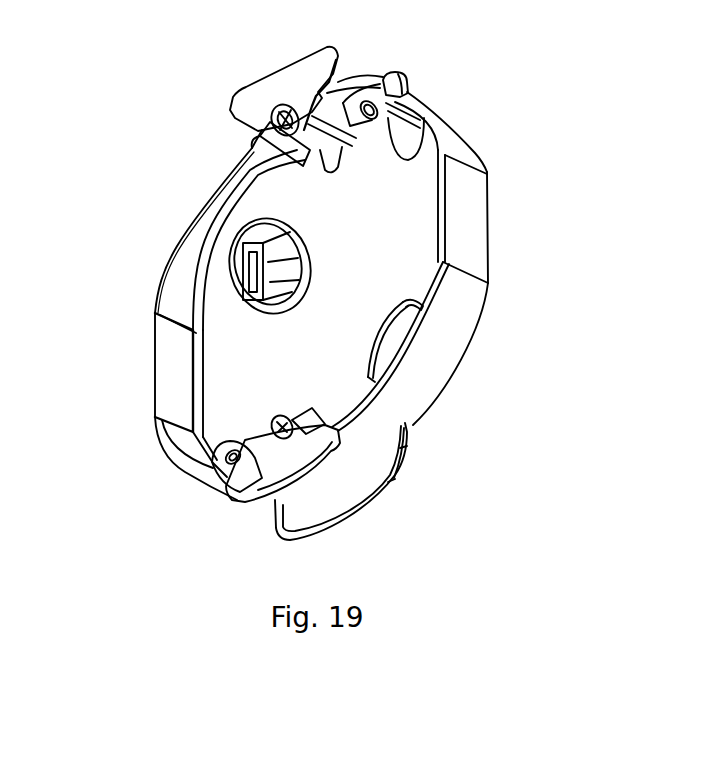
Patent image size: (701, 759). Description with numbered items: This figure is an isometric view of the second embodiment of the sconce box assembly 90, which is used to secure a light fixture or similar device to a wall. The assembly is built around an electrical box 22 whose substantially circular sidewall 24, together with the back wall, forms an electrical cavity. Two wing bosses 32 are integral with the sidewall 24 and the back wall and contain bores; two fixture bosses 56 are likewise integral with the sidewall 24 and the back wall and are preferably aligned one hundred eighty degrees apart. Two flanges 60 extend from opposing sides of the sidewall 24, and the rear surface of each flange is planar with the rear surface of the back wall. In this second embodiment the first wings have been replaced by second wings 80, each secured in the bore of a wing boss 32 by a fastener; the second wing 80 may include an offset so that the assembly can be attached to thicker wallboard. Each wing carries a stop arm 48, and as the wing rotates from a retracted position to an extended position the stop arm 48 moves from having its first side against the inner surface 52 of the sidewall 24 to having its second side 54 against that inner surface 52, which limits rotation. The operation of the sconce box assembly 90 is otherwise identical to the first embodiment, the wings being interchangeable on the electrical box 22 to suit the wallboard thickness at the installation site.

The electrical box 22 is at (458, 357).
The sidewall 24 is at (477, 221).
The wing boss 32 is at (322, 150).
The stop arm 48 is at (258, 162).
The inner surface 52 is at (212, 231).
The second side 54 is at (325, 418).
The fixture boss 56 is at (397, 137).
The flange 60 is at (403, 78).
The second wing 80 is at (263, 74).
The sconce box assembly 90 is at (128, 150).